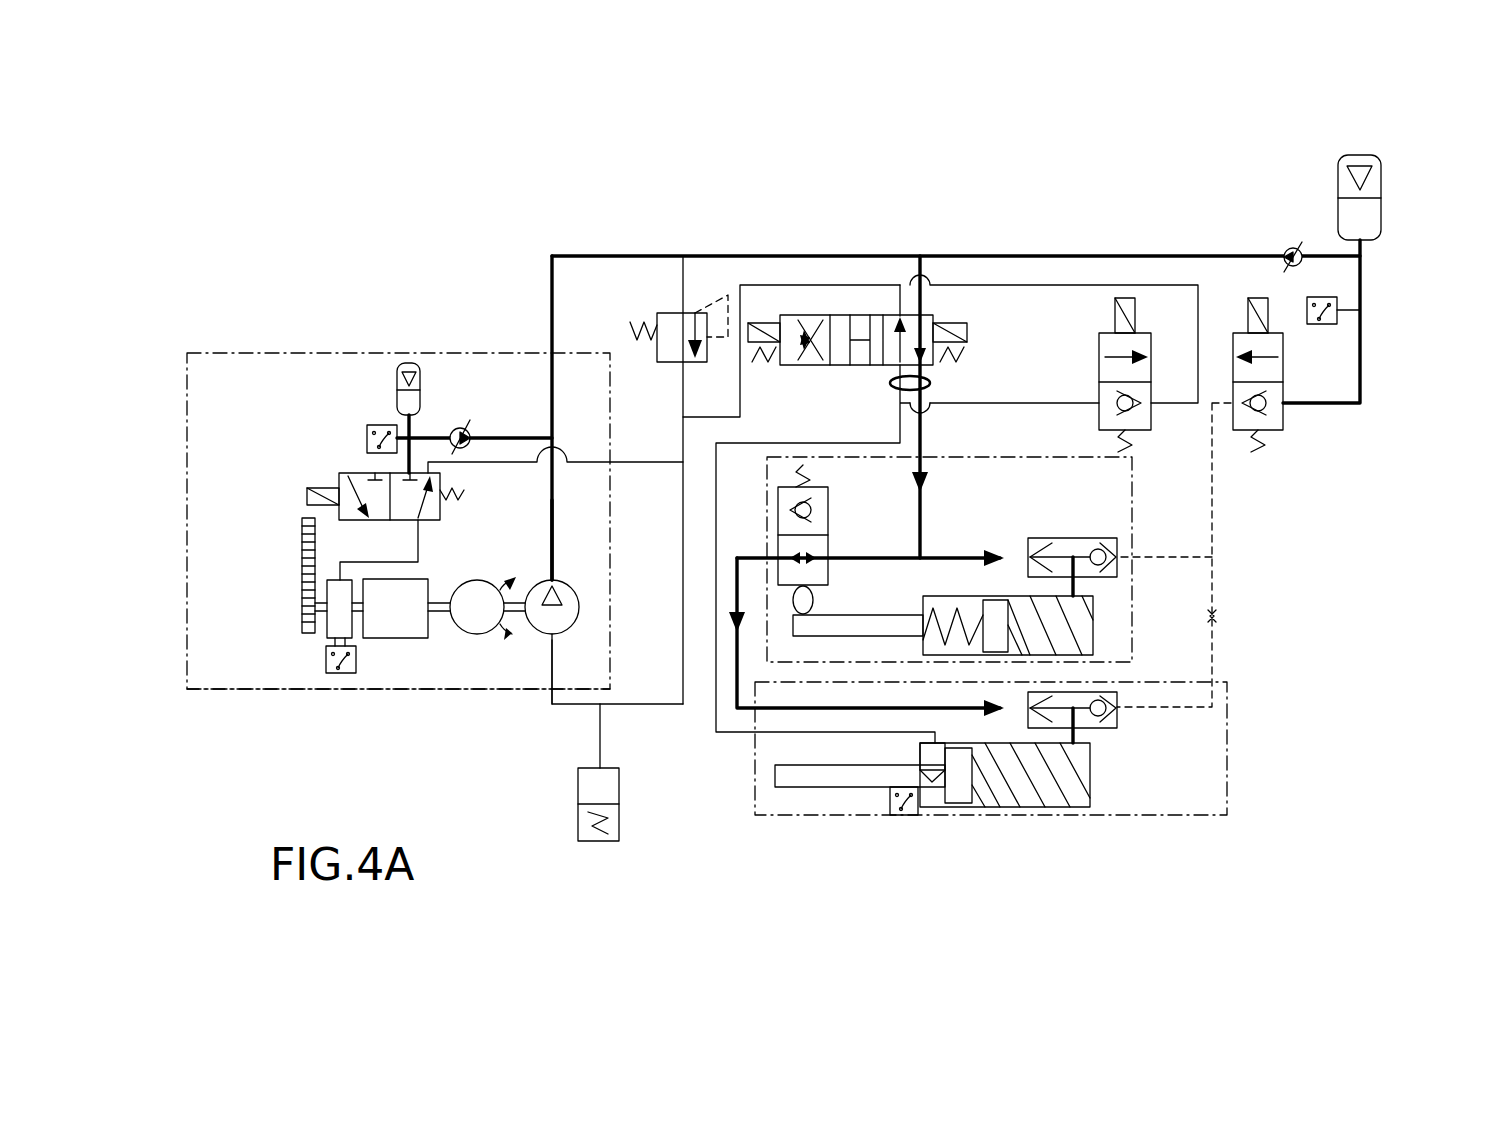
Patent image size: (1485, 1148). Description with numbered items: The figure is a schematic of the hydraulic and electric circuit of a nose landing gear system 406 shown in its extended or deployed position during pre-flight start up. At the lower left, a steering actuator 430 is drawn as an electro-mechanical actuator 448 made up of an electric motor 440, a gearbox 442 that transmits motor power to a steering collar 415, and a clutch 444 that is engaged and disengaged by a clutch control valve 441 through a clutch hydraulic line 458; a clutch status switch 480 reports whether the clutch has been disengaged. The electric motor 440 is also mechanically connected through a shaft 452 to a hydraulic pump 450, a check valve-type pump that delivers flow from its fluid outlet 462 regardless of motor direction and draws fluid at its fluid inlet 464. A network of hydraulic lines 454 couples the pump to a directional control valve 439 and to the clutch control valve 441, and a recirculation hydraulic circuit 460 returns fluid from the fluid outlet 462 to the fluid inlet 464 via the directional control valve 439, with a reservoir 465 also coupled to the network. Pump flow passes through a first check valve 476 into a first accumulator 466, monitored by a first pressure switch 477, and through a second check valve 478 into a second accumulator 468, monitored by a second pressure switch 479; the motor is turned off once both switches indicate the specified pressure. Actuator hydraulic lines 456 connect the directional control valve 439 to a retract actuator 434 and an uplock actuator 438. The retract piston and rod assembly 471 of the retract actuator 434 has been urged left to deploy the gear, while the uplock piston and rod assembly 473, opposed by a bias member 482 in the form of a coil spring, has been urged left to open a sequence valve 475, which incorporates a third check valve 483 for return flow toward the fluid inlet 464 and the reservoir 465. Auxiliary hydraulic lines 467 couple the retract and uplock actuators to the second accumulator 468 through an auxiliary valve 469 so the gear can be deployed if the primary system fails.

The nose landing gear system 406 is at (286, 186).
The network of hydraulic lines 454 is at (526, 288).
The steering actuator 430 is at (230, 610).
The electro-mechanical actuator 448 is at (226, 660).
The first accumulator 466 is at (398, 378).
The first pressure switch 477 is at (366, 430).
The first check valve 476 is at (466, 438).
The clutch control valve 441 is at (338, 474).
The clutch hydraulic line 458 is at (385, 560).
The steering collar 415 is at (302, 556).
The clutch 444 is at (327, 636).
The clutch status switch 480 is at (347, 673).
The gearbox 442 is at (400, 637).
The electric motor 440 is at (480, 635).
The shaft 452 is at (520, 596).
The hydraulic pump 450 is at (537, 636).
The fluid outlet 462 is at (556, 548).
The fluid inlet 464 is at (556, 656).
The recirculation hydraulic circuit 460 is at (683, 704).
The reservoir 465 is at (619, 798).
The directional control valve 439 is at (920, 292).
The actuator hydraulic lines 456 is at (930, 383).
The auxiliary hydraulic lines 467 is at (1212, 523).
The sequence valve 475 is at (828, 498).
The third check valve 483 is at (808, 514).
The uplock actuator 438 is at (1132, 590).
The uplock piston and rod assembly 473 is at (1000, 630).
The bias member 482 is at (955, 624).
The retract actuator 434 is at (1227, 733).
The retract piston and rod assembly 471 is at (957, 775).
The second check valve 478 is at (1292, 250).
The second accumulator 468 is at (1381, 185).
The second pressure switch 479 is at (1337, 320).
The auxiliary valve 469 is at (1283, 424).